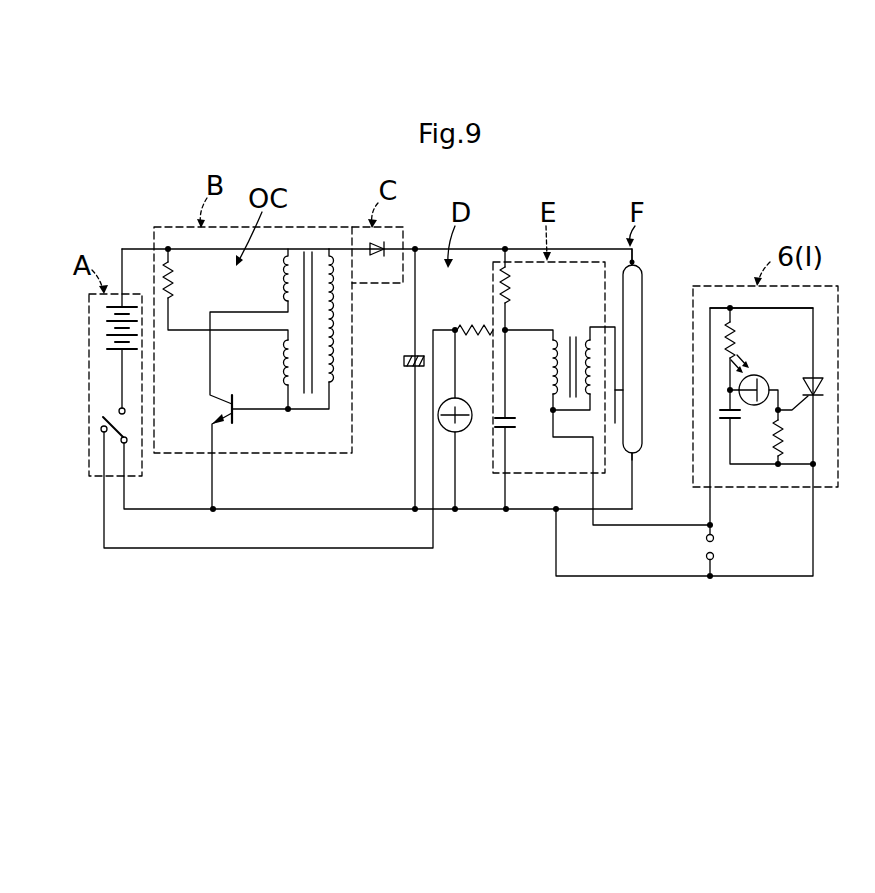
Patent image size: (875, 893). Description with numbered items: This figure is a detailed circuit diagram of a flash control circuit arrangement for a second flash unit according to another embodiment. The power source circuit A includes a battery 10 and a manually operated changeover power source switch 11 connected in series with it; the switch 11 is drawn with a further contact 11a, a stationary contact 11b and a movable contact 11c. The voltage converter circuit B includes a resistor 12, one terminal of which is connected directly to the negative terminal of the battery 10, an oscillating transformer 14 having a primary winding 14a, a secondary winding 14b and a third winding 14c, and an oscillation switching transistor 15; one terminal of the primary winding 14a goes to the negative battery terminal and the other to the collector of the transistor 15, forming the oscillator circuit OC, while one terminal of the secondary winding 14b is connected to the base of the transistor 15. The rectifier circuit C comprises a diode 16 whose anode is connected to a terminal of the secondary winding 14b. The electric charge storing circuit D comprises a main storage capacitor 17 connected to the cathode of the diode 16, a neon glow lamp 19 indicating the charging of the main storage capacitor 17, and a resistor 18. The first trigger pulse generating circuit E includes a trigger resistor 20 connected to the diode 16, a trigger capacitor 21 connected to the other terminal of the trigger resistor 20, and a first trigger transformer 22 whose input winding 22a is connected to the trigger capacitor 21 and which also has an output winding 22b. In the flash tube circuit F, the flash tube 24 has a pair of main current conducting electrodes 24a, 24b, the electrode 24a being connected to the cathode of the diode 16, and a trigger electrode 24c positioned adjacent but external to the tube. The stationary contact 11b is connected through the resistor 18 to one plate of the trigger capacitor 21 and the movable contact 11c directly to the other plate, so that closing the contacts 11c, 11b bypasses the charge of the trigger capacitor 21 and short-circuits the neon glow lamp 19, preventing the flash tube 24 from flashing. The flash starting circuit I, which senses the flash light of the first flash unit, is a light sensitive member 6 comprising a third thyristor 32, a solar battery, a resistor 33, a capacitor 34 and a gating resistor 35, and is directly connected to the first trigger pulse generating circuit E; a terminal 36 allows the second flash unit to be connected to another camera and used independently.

The battery 10 is at (108, 325).
The changeover switch 11 is at (106, 411).
The switch contact 11a is at (127, 411).
The stationary contact 11b is at (101, 432).
The movable contact 11c is at (112, 446).
The resistor 12 is at (172, 292).
The oscillating transformer 14 is at (311, 244).
The primary winding 14a is at (284, 279).
The secondary winding 14b is at (337, 375).
The third winding 14c is at (284, 370).
The transistor 15 is at (232, 418).
The diode 16 is at (378, 254).
The main storage capacitor 17 is at (407, 360).
The resistor 18 is at (472, 326).
The neon glow lamp 19 is at (462, 433).
The trigger resistor 20 is at (509, 285).
The trigger capacitor 21 is at (511, 423).
The first trigger transformer 22 is at (573, 334).
The input winding 22a is at (548, 375).
The output winding 22b is at (598, 405).
The flash tube 24 is at (642, 330).
The main current conducting electrode 24a is at (640, 268).
The main current conducting electrode 24b is at (640, 455).
The trigger electrode 24c is at (618, 395).
The light sensitive member 6 is at (762, 378).
The third thyristor 32 is at (824, 392).
The resistor 33 is at (733, 340).
The capacitor 34 is at (742, 418).
The gating resistor 35 is at (784, 448).
The terminal 36 is at (716, 546).